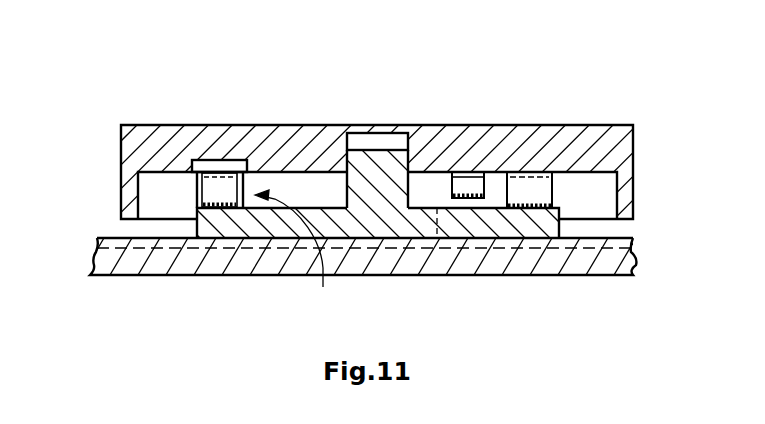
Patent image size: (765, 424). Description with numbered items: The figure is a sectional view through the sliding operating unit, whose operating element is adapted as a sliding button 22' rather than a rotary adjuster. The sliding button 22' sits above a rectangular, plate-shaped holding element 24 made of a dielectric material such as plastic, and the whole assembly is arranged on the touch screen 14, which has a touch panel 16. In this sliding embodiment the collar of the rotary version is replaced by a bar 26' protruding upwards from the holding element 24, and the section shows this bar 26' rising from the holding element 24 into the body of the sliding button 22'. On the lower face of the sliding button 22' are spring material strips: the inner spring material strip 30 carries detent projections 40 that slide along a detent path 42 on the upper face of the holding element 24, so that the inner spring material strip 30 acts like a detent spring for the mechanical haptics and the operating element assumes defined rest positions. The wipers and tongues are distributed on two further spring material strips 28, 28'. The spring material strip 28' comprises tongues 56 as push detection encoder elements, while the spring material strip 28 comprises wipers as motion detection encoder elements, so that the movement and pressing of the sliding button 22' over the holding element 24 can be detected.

The touch screen 14 is at (625, 243).
The touch panel 16 is at (595, 262).
The sliding button 22' is at (363, 112).
The holding element 24 is at (277, 220).
The bar 26' is at (368, 117).
The spring material strip 28 is at (545, 119).
The spring material strip 28' is at (488, 113).
The inner spring material strip 30 is at (220, 175).
The detent projection 40 is at (213, 188).
The detent path 42 is at (296, 252).
The tongue 56 is at (467, 198).